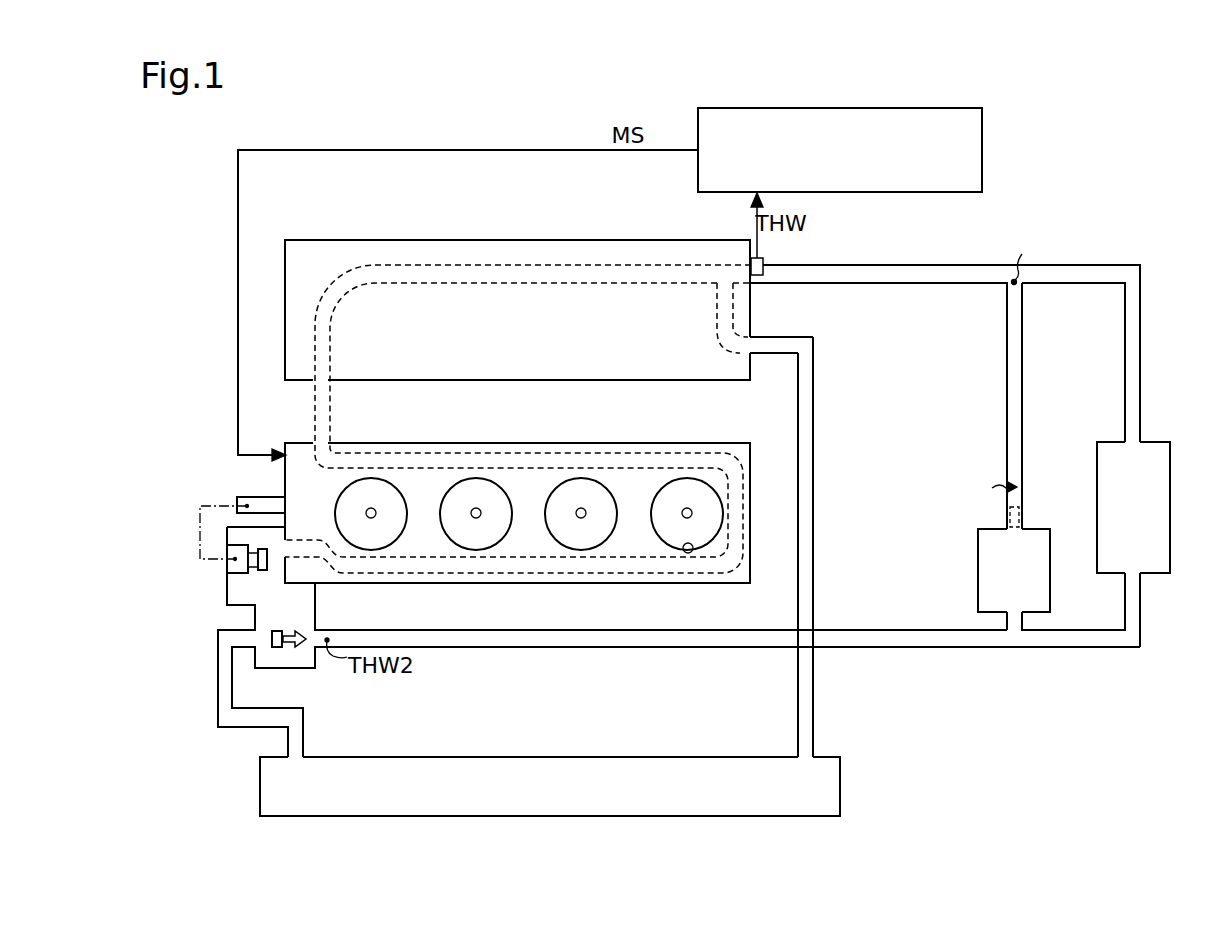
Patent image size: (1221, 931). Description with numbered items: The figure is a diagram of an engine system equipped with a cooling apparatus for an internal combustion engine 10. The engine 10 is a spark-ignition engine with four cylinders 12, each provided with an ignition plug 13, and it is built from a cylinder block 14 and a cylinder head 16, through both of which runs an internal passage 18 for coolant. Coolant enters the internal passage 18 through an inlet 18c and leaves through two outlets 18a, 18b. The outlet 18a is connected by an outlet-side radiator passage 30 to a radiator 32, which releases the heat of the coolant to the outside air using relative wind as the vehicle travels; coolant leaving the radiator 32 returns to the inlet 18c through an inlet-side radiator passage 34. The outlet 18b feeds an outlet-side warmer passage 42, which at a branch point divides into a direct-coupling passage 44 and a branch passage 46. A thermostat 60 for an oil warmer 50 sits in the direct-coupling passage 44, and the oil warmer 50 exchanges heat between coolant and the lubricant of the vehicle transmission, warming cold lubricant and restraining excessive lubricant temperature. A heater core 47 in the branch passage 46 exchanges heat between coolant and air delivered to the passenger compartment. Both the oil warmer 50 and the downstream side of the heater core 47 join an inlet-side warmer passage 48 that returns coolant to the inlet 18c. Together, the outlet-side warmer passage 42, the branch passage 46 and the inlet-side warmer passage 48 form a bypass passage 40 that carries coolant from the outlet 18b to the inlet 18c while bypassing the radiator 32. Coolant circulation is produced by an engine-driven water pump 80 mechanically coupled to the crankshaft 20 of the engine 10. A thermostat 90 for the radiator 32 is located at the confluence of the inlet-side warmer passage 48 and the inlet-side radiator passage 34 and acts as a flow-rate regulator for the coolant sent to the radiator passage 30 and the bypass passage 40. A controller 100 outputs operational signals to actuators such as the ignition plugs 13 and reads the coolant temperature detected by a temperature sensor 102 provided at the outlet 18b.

The internal combustion engine 10 is at (517, 411).
The cylinder 12 is at (686, 553).
The ignition plug 13 is at (471, 510).
The cylinder block 14 is at (517, 498).
The cylinder head 16 is at (638, 381).
The internal passage 18 is at (482, 454).
The outlet 18a is at (758, 360).
The outlet 18b is at (759, 287).
The inlet 18c is at (299, 536).
The crankshaft 20 is at (262, 497).
The outlet-side radiator passage 30 is at (815, 477).
The radiator 32 is at (547, 755).
The inlet-side radiator passage 34 is at (217, 678).
The bypass passage 40 is at (1005, 439).
The outlet-side warmer passage 42 is at (964, 266).
The direct-coupling passage 44 is at (1024, 353).
The branch passage 46 is at (1142, 353).
The heater core 47 is at (1172, 507).
The inlet-side warmer passage 48 is at (975, 649).
The oil warmer 50 is at (978, 570).
The thermostat 60 is at (1014, 530).
The water pump 80 is at (228, 573).
The thermostat 90 is at (276, 669).
The controller 100 is at (984, 152).
The temperature sensor 102 is at (766, 259).